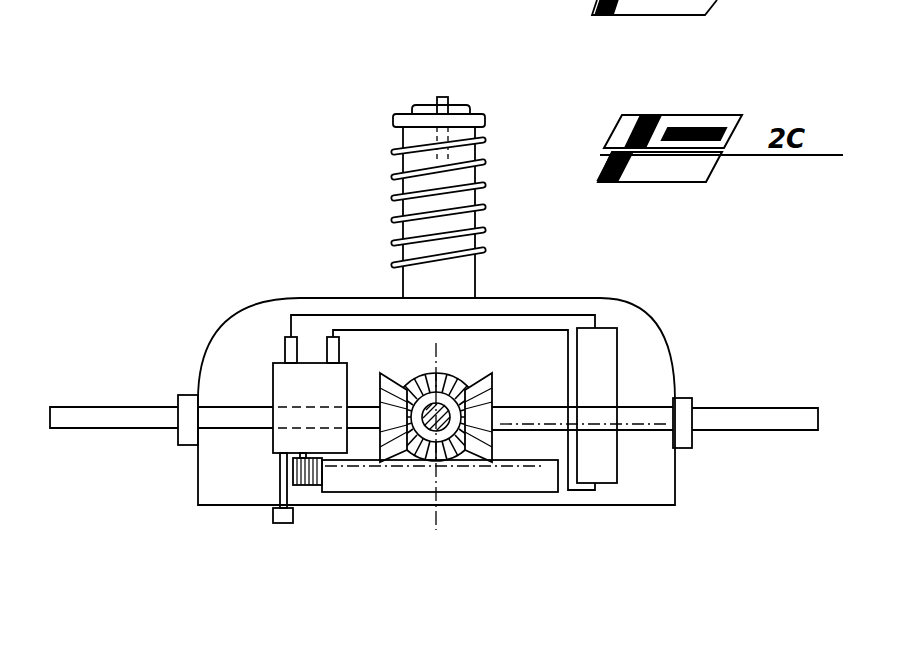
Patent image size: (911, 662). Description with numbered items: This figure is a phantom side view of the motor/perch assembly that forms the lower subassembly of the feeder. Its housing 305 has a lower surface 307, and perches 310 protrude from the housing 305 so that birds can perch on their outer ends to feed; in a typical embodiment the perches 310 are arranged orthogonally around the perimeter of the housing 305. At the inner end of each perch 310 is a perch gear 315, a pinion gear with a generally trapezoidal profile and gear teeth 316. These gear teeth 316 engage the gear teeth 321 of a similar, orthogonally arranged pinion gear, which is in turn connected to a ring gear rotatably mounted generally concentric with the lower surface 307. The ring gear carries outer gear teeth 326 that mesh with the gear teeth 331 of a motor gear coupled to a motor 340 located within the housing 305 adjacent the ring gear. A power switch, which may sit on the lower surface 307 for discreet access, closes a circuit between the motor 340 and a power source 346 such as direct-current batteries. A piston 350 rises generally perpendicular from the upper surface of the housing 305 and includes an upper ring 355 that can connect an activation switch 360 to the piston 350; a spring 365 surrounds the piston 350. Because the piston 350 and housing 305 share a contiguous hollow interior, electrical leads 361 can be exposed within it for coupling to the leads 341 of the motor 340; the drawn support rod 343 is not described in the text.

The housing 305 is at (226, 322).
The lower surface 307 is at (628, 508).
The perch 310 is at (145, 412).
The perch gear 315 is at (388, 372).
The gear teeth 316 is at (408, 388).
The gear teeth 321 is at (477, 457).
The outer gear teeth 326 is at (535, 478).
The gear teeth 331 is at (297, 470).
The motor 340 is at (282, 382).
The leads 341 is at (285, 353).
The support rod 343 is at (277, 523).
The power source 346 is at (598, 360).
The piston 350 is at (481, 270).
The upper ring 355 is at (395, 118).
The activation switch 360 is at (443, 97).
The electrical leads 361 is at (478, 178).
The spring 365 is at (394, 150).